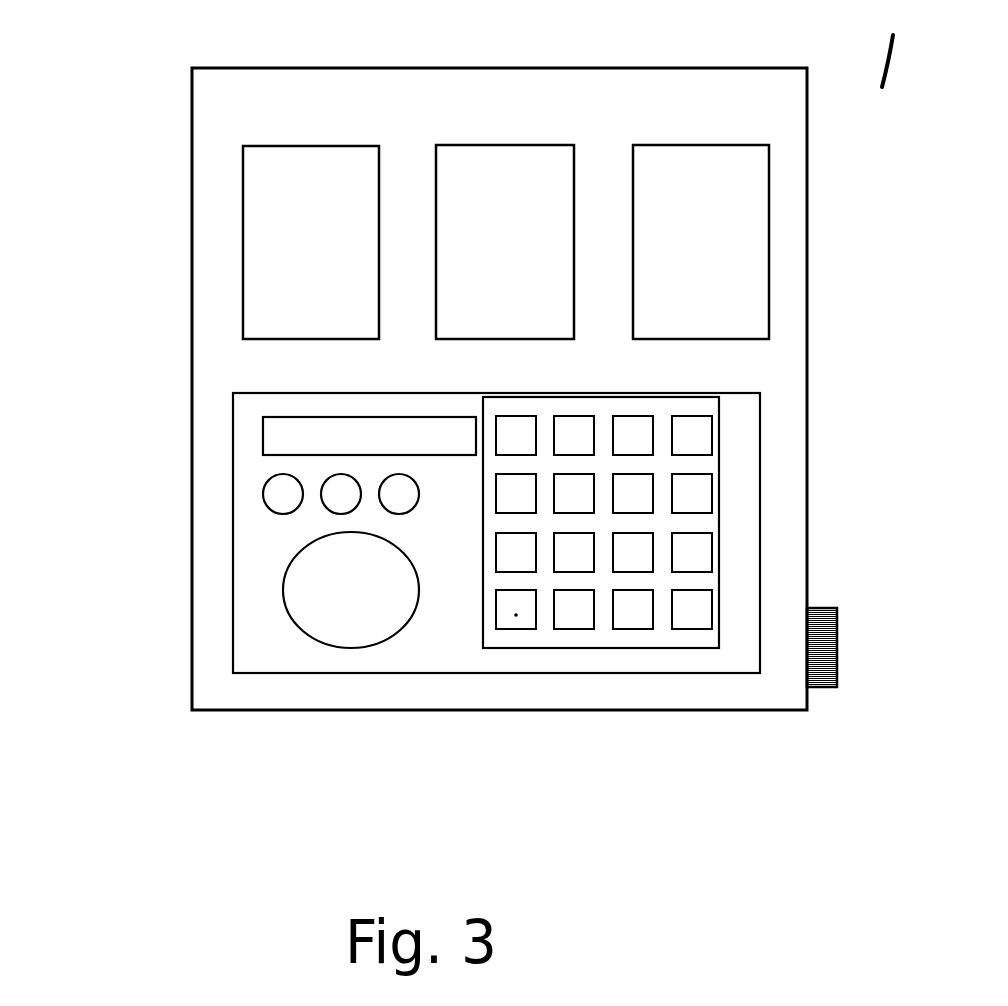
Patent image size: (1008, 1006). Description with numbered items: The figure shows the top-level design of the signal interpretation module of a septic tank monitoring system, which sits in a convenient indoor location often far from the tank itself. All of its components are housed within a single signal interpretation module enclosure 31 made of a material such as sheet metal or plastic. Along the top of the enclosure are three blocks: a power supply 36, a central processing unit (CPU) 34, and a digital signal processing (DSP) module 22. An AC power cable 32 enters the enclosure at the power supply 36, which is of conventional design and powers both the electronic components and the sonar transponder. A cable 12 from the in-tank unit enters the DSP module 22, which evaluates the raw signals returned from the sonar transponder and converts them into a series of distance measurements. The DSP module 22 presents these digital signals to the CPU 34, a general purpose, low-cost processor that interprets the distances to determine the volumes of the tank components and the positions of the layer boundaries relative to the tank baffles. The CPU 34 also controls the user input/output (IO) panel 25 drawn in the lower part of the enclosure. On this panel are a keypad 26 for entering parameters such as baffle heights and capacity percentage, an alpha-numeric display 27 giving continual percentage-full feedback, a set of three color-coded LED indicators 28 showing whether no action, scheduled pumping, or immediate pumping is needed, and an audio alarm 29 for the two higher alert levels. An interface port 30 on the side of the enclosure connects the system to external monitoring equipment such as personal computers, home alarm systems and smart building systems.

The cable 12 is at (737, 145).
The digital signal processing (DSP) module 22 is at (701, 242).
The input/output (IO) panel 25 is at (770, 456).
The keypad 26 is at (733, 570).
The alpha-numeric display 27 is at (252, 436).
The LED indicators 28 is at (255, 493).
The audio alarm 29 is at (273, 608).
The interface port 30 is at (848, 648).
The signal interpretation module enclosure 31 is at (182, 107).
The AC power cable 32 is at (243, 252).
The central processing unit (CPU) 34 is at (505, 242).
The power supply 36 is at (311, 242).